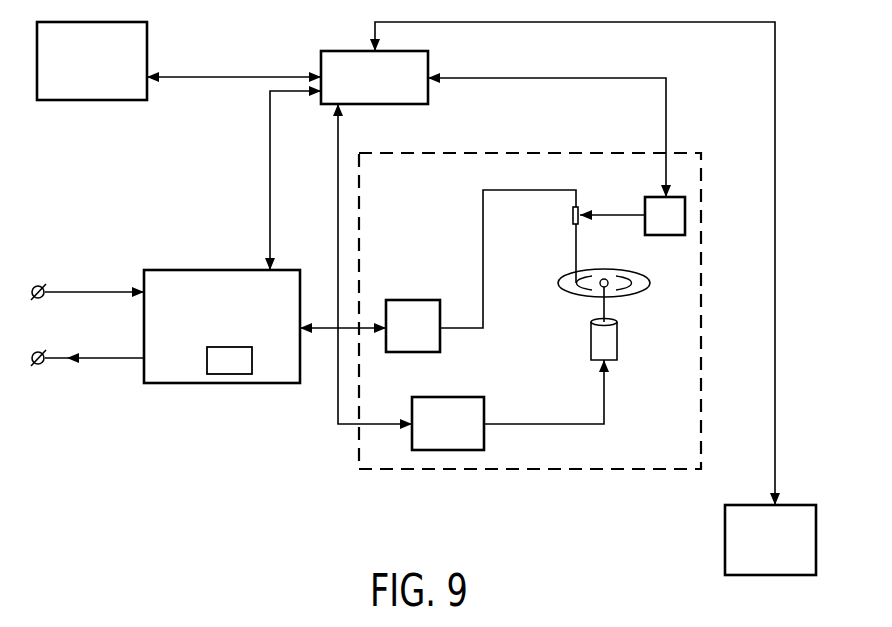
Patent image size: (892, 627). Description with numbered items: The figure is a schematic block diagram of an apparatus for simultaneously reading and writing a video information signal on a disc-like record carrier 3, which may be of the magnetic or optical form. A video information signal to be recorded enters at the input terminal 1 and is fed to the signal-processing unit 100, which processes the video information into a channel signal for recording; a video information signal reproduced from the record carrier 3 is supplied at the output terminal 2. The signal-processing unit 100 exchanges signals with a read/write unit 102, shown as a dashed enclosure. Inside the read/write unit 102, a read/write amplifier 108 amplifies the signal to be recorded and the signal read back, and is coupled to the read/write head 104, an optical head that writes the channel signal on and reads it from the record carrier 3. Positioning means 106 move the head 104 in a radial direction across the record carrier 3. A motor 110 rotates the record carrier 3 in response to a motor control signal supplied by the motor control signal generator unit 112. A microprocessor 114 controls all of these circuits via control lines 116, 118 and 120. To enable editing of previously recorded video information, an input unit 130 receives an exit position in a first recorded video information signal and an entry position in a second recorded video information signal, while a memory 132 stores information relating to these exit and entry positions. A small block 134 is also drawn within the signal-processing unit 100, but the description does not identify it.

The input terminal 1 is at (40, 286).
The output terminal 2 is at (40, 365).
The record carrier 3 is at (560, 278).
The signal-processing unit 100 is at (192, 282).
The read/write unit 102 is at (702, 331).
The read/write head 104 is at (573, 215).
The positioning means 106 is at (685, 215).
The read/write amplifier 108 is at (405, 312).
The motor 110 is at (590, 342).
The motor control signal generator unit 112 is at (465, 405).
The microprocessor 114 is at (336, 54).
The control line 116 is at (270, 153).
The control line 118 is at (338, 132).
The control line 120 is at (545, 78).
The input unit 130 is at (730, 519).
The memory 132 is at (88, 101).
The buffer register 134 is at (226, 368).